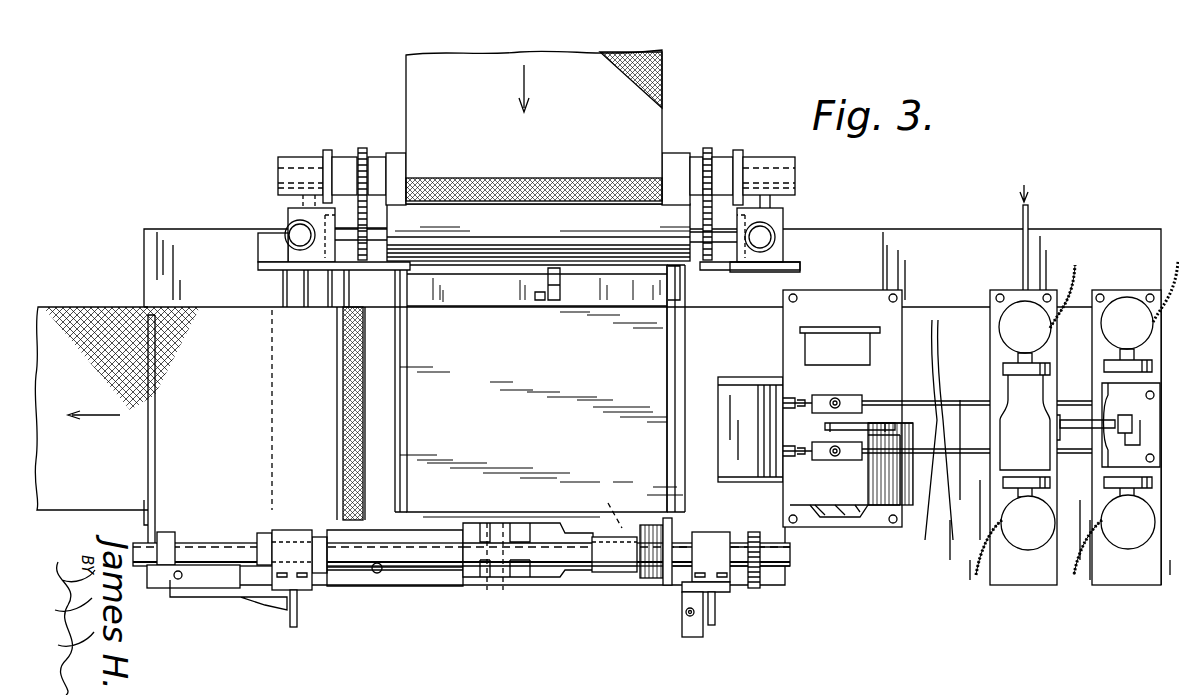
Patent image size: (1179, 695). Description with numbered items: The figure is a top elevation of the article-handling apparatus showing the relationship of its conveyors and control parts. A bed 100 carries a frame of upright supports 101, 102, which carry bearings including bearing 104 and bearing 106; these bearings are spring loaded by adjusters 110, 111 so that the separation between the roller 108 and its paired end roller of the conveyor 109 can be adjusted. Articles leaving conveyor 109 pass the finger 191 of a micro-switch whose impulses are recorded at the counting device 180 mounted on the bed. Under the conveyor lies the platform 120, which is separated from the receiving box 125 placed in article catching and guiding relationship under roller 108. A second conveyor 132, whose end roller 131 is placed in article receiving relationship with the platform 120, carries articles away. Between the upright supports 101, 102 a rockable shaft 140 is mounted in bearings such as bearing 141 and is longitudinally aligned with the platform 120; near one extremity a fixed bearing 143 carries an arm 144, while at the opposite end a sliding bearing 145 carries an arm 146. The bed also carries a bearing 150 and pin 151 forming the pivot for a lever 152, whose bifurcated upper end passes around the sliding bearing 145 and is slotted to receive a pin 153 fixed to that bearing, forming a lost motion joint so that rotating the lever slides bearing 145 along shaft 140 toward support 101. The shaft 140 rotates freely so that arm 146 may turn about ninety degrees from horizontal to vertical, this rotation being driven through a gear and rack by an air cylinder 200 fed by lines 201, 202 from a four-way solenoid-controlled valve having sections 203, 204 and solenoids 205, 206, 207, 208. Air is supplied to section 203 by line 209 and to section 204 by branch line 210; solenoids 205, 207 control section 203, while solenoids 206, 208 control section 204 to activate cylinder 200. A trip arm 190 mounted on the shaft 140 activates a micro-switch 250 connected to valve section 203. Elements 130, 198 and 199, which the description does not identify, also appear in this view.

The bed 100 is at (878, 575).
The upright support 101 is at (297, 616).
The upright support 102 is at (716, 610).
The bearing 104 is at (788, 252).
The bearing 106 is at (282, 248).
The roller 108 is at (538, 232).
The conveyor 109 is at (660, 106).
The adjuster 110 is at (288, 225).
The adjuster 111 is at (783, 228).
The platform 120 is at (541, 391).
The receiving box 125 is at (408, 390).
The slide carriage 130 is at (443, 560).
The roller 131 is at (395, 520).
The conveyor 132 is at (192, 440).
The rockable shaft 140 is at (447, 582).
The bearing 141 is at (268, 540).
The bearing 143 is at (170, 580).
The arm 144 is at (150, 462).
The sliding bearing 145 is at (615, 578).
The arm 146 is at (666, 522).
The bearing 150 is at (528, 578).
The pin 151 is at (490, 592).
The lever 152 is at (582, 575).
The pin 153 is at (596, 502).
The counting device 180 is at (878, 487).
The trip arm 190 is at (710, 562).
The finger 191 is at (548, 305).
The mounting plate 198 is at (760, 555).
The sprocket 199 is at (762, 588).
The air cylinder 200 is at (740, 377).
The line 201 is at (812, 400).
The line 202 is at (812, 458).
The section 203 is at (1000, 398).
The section 204 is at (1110, 425).
The solenoid 205 is at (1030, 545).
The solenoid 206 is at (1130, 545).
The solenoid 207 is at (1015, 302).
The solenoid 208 is at (1125, 302).
The line 209 is at (1020, 210).
The branch line 210 is at (1020, 420).
The micro-switch 250 is at (686, 637).